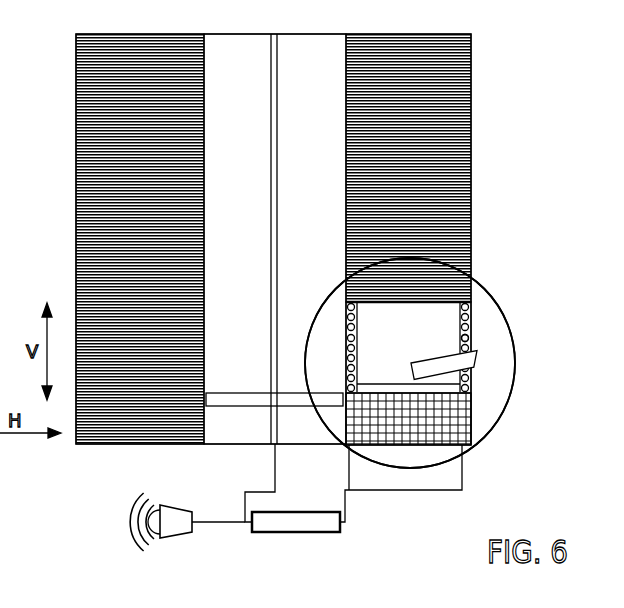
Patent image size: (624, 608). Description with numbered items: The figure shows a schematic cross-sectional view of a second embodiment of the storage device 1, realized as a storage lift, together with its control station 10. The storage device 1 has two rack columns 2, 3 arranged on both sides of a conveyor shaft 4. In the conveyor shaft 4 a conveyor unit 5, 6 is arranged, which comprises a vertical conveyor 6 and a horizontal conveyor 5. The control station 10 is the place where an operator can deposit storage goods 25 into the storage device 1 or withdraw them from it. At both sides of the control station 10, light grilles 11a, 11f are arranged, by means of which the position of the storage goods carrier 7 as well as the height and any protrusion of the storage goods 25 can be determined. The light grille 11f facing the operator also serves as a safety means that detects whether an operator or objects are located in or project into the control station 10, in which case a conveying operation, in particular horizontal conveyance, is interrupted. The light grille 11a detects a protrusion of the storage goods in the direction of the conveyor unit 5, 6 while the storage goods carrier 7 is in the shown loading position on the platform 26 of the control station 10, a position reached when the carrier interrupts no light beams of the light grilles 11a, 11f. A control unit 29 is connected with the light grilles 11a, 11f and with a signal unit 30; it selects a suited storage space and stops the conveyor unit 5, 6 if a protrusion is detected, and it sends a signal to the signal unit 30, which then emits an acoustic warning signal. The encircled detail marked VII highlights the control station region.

The storage device 1 is at (527, 78).
The rack column 2 is at (102, 130).
The rack column 3 is at (468, 120).
The conveyor shaft 4 is at (242, 40).
The horizontal conveyor 5 is at (274, 437).
The vertical conveyor 6 is at (228, 402).
The storage goods carrier 7 is at (368, 388).
The control station 10 is at (487, 315).
The light grille 11a is at (357, 331).
The light grille 11f is at (465, 341).
The storage goods 25 is at (468, 367).
The platform 26 is at (472, 412).
The control unit 29 is at (327, 524).
The signal unit 30 is at (175, 517).
The detail view VII is at (515, 356).